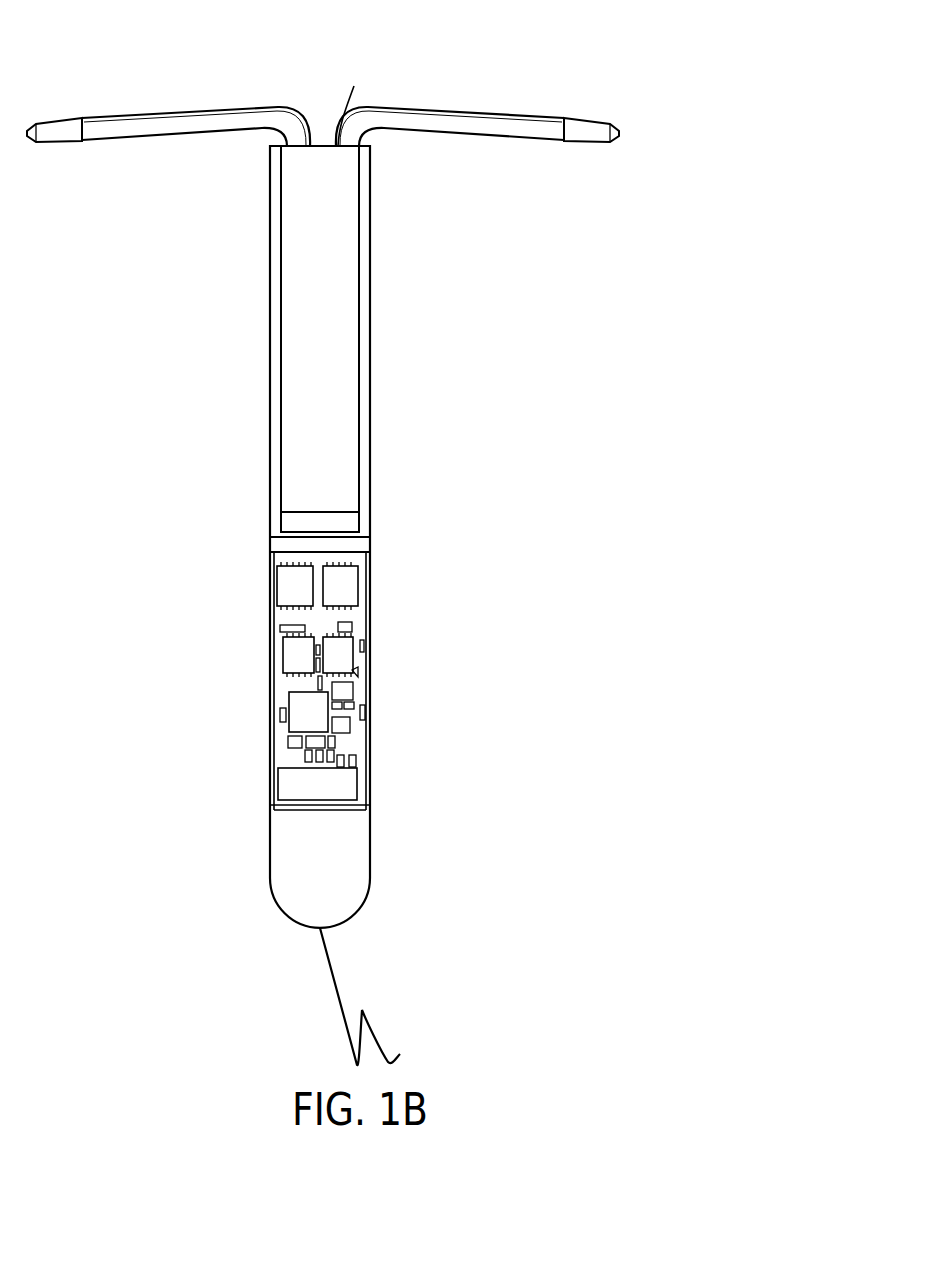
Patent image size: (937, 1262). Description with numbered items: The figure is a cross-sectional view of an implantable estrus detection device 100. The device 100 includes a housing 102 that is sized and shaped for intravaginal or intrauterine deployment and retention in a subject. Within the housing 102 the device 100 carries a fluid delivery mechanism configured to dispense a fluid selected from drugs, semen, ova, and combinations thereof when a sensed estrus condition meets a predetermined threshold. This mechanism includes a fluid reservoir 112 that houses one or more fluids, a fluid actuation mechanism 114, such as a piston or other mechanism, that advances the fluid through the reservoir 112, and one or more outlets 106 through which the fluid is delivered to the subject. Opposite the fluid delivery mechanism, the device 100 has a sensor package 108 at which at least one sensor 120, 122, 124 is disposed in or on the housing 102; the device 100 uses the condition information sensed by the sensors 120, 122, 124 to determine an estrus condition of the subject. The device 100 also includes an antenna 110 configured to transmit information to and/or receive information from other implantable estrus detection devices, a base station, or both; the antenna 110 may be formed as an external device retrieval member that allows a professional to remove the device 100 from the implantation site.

The device 100 is at (581, 70).
The housing 102 is at (270, 278).
The outlets 106 is at (331, 146).
The sensor package 108 is at (253, 555).
The antenna 110 is at (338, 1000).
The fluid reservoir 112 is at (348, 392).
The fluid actuation mechanism 114 is at (345, 523).
The sensor 120 is at (312, 718).
The sensor 122 is at (348, 785).
The sensor 124 is at (349, 589).